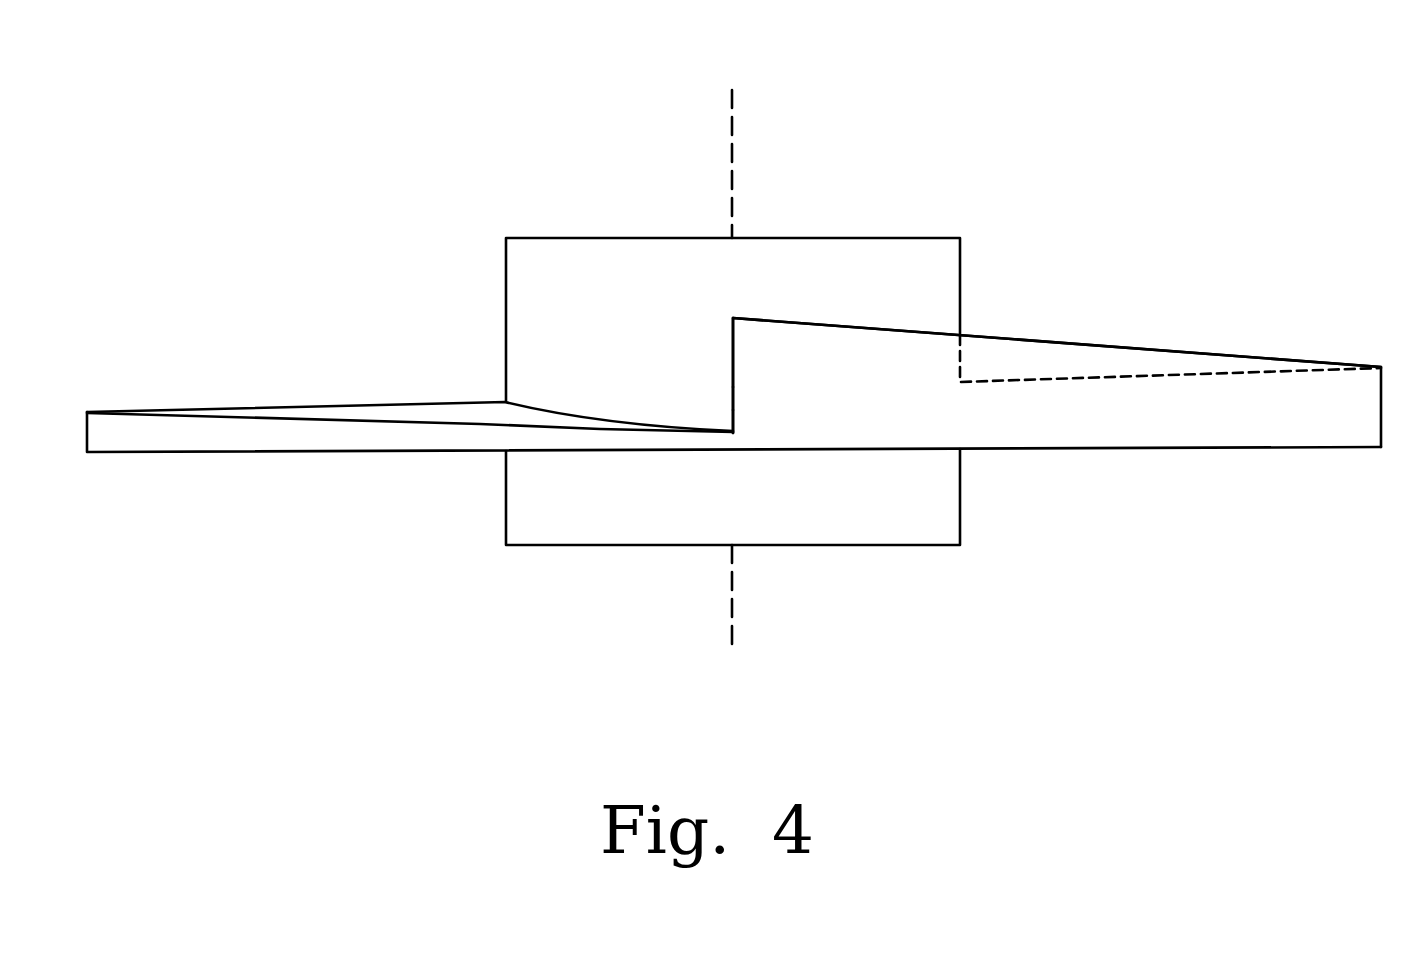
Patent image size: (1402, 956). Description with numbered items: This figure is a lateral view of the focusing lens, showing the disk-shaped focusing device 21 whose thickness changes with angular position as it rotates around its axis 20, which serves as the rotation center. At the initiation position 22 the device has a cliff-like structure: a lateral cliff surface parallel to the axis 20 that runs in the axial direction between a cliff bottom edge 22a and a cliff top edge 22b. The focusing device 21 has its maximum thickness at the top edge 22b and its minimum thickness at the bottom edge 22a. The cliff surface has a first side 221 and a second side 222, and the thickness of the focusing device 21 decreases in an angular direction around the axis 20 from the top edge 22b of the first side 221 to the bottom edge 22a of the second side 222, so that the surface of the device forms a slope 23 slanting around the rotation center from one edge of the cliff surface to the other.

The axis 20 is at (732, 123).
The focusing device 21 is at (233, 453).
The initiation position 22 is at (743, 294).
The bottom edge 22a is at (733, 433).
The top edge 22b is at (737, 318).
The first side 221 is at (733, 410).
The second side 222 is at (733, 387).
The slope 23 is at (353, 415).